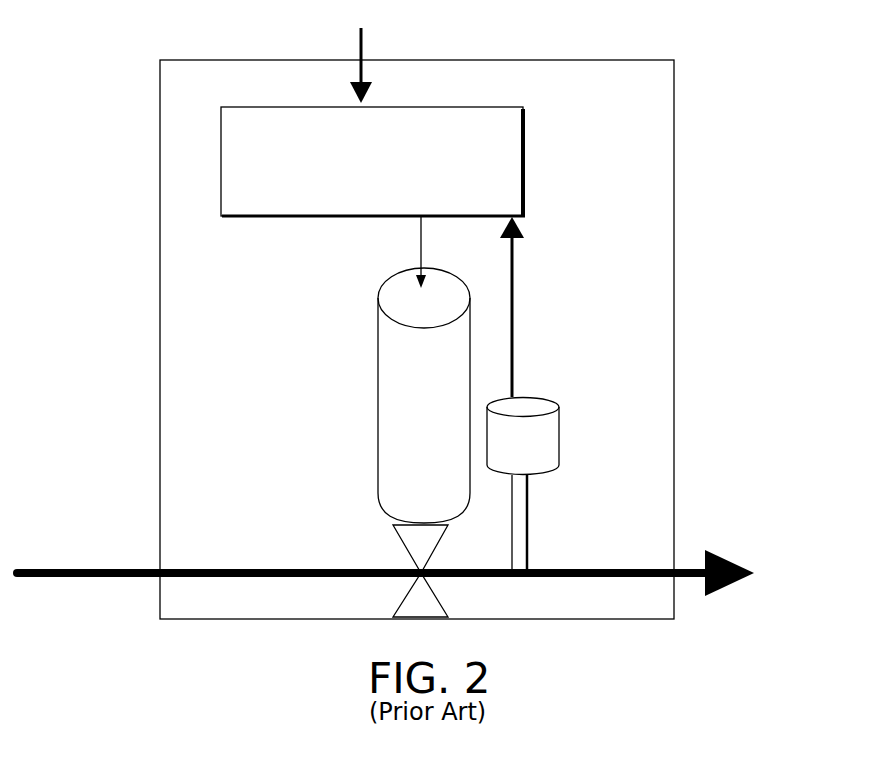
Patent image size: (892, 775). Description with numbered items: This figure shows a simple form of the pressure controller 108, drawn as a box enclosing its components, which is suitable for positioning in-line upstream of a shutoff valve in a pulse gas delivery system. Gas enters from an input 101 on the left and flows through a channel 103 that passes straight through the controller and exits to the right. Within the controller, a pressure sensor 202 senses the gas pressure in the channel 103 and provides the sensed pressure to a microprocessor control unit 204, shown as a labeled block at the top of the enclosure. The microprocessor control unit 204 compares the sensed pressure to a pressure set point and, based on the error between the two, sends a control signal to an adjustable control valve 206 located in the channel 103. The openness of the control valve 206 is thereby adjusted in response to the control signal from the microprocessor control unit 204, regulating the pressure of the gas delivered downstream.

The input 101 is at (52, 568).
The channel 103 is at (686, 568).
The pressure controller 108 is at (669, 318).
The pressure sensor 202 is at (560, 440).
The microprocessor control unit 204 is at (525, 202).
The adjustable control valve 206 is at (378, 419).